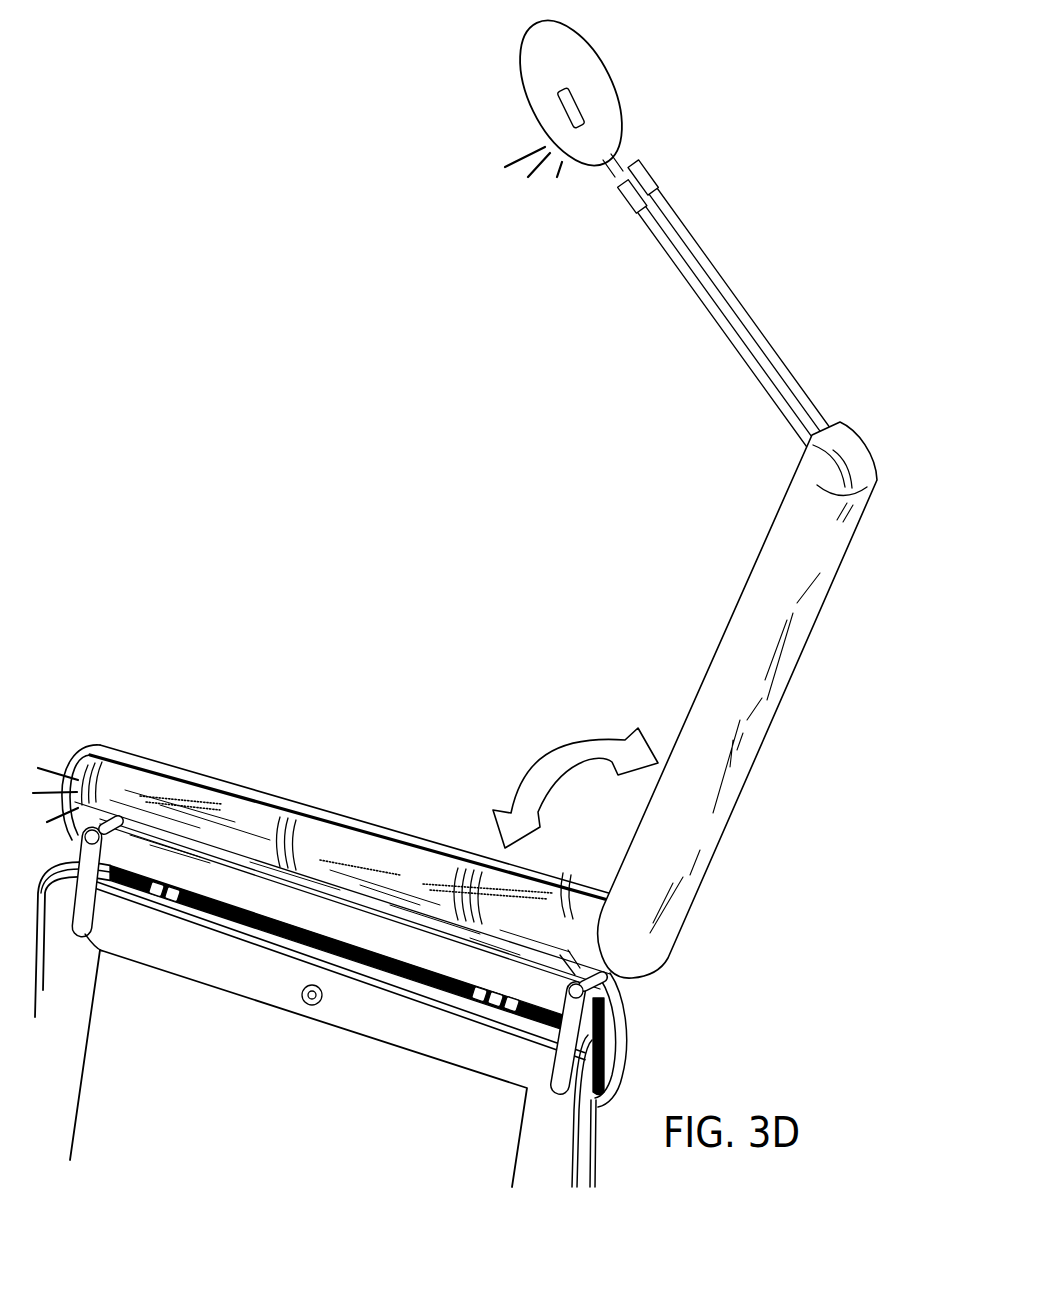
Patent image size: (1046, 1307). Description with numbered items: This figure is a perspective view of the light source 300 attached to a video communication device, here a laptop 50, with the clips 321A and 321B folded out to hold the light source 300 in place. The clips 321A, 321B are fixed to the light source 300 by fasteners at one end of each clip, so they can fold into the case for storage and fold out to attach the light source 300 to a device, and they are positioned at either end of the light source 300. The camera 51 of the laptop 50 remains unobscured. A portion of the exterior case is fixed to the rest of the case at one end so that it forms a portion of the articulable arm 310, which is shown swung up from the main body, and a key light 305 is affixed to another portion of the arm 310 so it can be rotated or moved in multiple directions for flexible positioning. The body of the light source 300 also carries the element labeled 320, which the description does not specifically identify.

The light source 300 is at (210, 241).
The key light 305 is at (537, 72).
The articulable arm 310 is at (667, 217).
The headrest cushion 320 is at (350, 838).
The clip 321A is at (112, 952).
The clip 321B is at (590, 1000).
The laptop 50 is at (205, 1126).
The camera 51 is at (311, 1010).